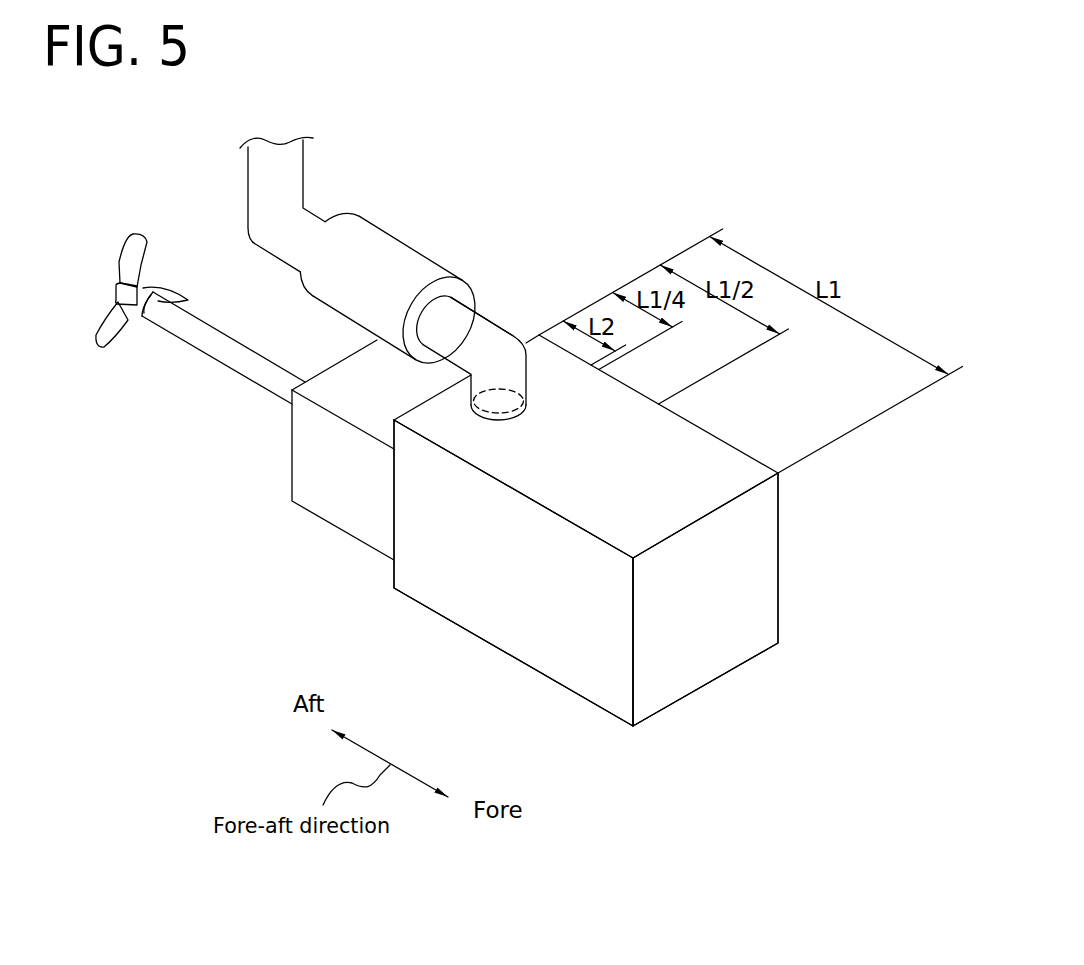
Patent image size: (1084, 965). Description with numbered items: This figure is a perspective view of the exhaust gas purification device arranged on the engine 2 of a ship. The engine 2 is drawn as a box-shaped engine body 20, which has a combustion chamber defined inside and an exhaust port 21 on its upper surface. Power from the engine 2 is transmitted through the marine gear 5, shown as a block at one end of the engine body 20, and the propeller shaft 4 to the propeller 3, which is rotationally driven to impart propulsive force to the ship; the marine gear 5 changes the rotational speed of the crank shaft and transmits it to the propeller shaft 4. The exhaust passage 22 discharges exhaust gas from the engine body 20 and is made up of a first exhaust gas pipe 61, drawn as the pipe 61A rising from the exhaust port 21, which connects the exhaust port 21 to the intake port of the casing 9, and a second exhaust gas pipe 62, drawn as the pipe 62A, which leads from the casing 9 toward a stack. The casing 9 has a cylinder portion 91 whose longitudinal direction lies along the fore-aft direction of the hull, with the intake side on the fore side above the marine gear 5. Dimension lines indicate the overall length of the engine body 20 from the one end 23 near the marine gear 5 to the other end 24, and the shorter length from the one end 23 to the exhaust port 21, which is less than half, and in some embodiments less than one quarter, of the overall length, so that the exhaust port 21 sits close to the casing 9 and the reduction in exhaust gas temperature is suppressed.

The engine 2 is at (565, 530).
The propeller 3 is at (120, 260).
The propeller shaft 4 is at (232, 368).
The marine gear 5 is at (318, 517).
The casing 9 is at (394, 271).
The engine body 20 is at (565, 530).
The exhaust port 21 is at (500, 417).
The exhaust passage 22 is at (489, 315).
The one end 23 is at (393, 575).
The other end 24 is at (755, 578).
The first exhaust gas pipe 61 is at (504, 312).
The first exhaust gas pipe 61A is at (508, 328).
The second exhaust gas pipe 62 is at (231, 204).
The second exhaust gas pipe 62A is at (247, 195).
The cylinder portion 91 is at (427, 248).